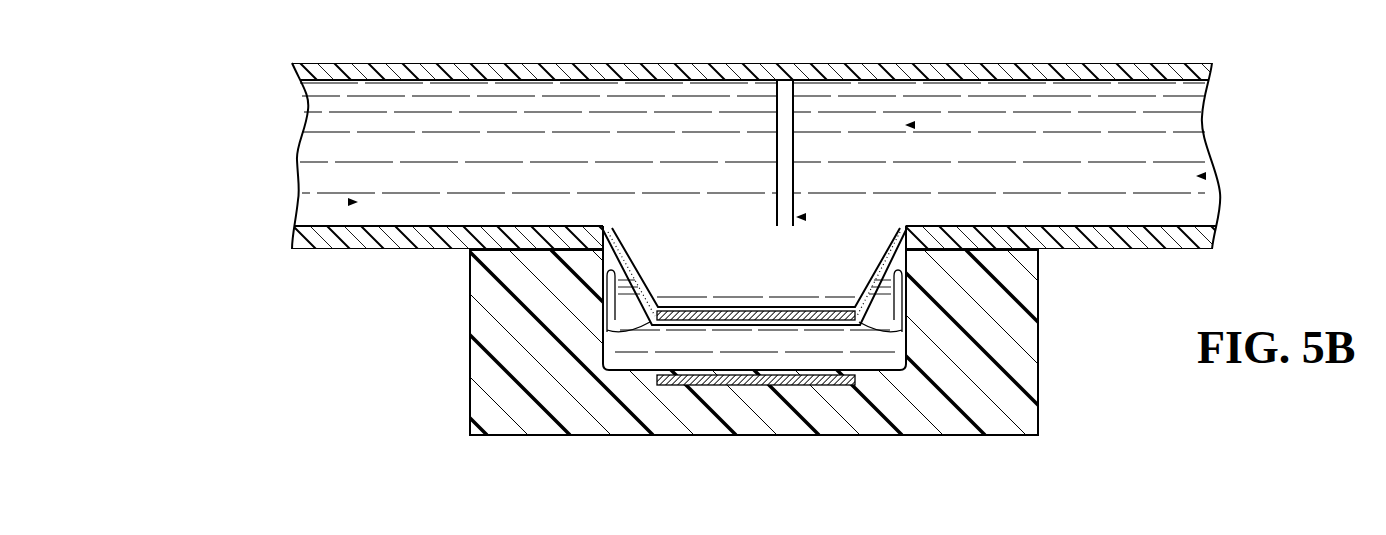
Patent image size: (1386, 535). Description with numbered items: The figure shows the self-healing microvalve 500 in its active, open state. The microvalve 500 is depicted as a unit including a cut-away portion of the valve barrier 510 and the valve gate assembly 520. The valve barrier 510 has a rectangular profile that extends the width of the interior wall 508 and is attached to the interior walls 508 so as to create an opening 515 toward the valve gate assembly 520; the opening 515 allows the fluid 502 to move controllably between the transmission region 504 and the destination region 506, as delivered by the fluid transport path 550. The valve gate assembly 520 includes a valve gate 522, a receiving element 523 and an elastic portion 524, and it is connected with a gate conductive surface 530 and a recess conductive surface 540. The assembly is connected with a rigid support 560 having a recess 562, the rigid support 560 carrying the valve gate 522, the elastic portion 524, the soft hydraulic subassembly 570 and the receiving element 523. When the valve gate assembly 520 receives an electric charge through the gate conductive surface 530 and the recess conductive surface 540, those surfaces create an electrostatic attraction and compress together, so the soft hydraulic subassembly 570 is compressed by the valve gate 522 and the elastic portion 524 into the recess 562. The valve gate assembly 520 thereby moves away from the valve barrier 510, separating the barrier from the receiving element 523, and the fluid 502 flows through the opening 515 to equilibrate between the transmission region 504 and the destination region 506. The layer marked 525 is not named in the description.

The self-healing microvalve 500 is at (250, 62).
The fluid 502 is at (370, 150).
The transmission region 504 is at (350, 202).
The destination region 506 is at (1204, 176).
The interior wall 508 is at (1170, 78).
The valve barrier 510 is at (913, 125).
The opening 515 is at (804, 217).
The valve gate assembly 520 is at (913, 257).
The valve gate 522 is at (920, 332).
The receiving element 523 is at (680, 297).
The elastic portion 524 is at (600, 275).
The sensing element 525 is at (737, 307).
The gate conductive surface 530 is at (613, 342).
The recess conductive surface 540 is at (780, 402).
The fluid transport path 550 is at (333, 128).
The rigid support 560 is at (548, 398).
The recess 562 is at (907, 337).
The soft hydraulic subassembly 570 is at (852, 348).